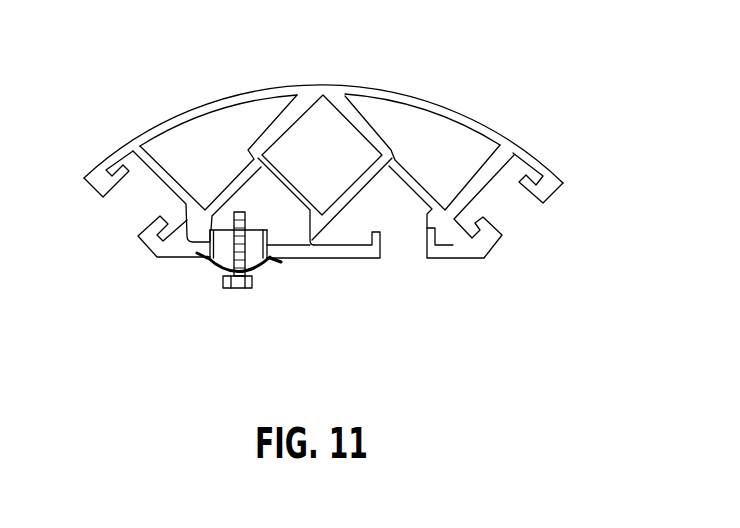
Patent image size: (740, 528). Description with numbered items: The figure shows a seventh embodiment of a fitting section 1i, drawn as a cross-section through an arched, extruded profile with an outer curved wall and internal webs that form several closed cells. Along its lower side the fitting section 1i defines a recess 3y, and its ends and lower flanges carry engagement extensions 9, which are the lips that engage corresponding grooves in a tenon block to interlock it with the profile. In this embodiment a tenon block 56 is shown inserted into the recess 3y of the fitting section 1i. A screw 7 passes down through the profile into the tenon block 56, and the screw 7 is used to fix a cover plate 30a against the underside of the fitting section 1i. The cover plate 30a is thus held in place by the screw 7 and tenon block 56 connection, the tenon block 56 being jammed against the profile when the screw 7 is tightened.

The fitting section 1i is at (439, 106).
The engagement extensions 9 is at (522, 187).
The recess 3y is at (400, 217).
The tenon block 56 is at (283, 223).
The screw 7 is at (247, 287).
The cover plate 30a is at (218, 271).